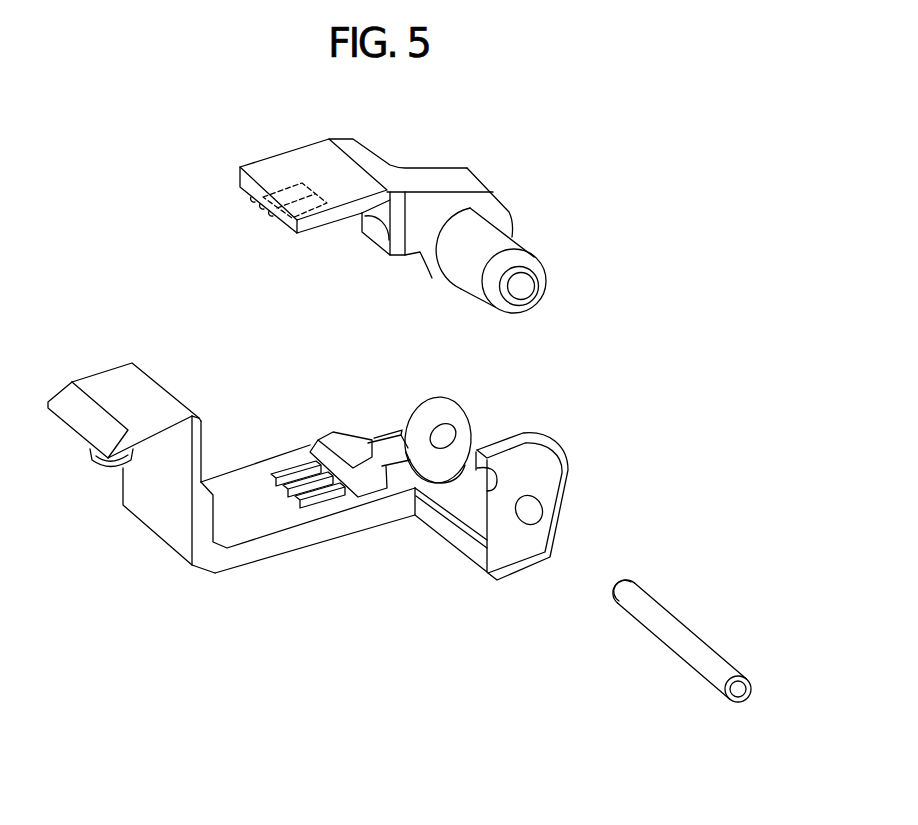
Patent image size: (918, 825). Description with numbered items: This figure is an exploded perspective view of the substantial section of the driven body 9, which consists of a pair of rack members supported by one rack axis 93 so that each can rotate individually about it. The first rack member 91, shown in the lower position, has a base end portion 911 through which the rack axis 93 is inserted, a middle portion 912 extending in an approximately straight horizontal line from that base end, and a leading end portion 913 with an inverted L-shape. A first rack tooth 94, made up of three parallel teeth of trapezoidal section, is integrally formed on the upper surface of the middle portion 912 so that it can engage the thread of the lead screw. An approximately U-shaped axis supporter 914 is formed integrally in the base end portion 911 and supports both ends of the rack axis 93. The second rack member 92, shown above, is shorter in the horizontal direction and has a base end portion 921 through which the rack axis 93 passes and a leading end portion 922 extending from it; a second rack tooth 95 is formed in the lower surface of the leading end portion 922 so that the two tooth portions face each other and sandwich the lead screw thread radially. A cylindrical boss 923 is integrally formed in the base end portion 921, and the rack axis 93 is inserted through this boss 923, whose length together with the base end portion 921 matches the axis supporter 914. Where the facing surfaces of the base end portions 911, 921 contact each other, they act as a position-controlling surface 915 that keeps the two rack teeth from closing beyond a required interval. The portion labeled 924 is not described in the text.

The driven body 9 is at (592, 328).
The first rack member 91 is at (339, 538).
The base end portion 911 is at (345, 447).
The middle portion 912 is at (250, 520).
The leading end portion 913 is at (120, 393).
The axis supporter 914 is at (443, 520).
The position-controlling surface 915 is at (388, 450).
The second rack member 92 is at (431, 166).
The base end portion 921 is at (496, 202).
The leading end portion 922 is at (287, 166).
The boss 923 is at (513, 241).
The foot 924 is at (398, 258).
The rack axis 93 is at (686, 636).
The first rack tooth 94 is at (297, 470).
The second rack tooth 95 is at (256, 205).